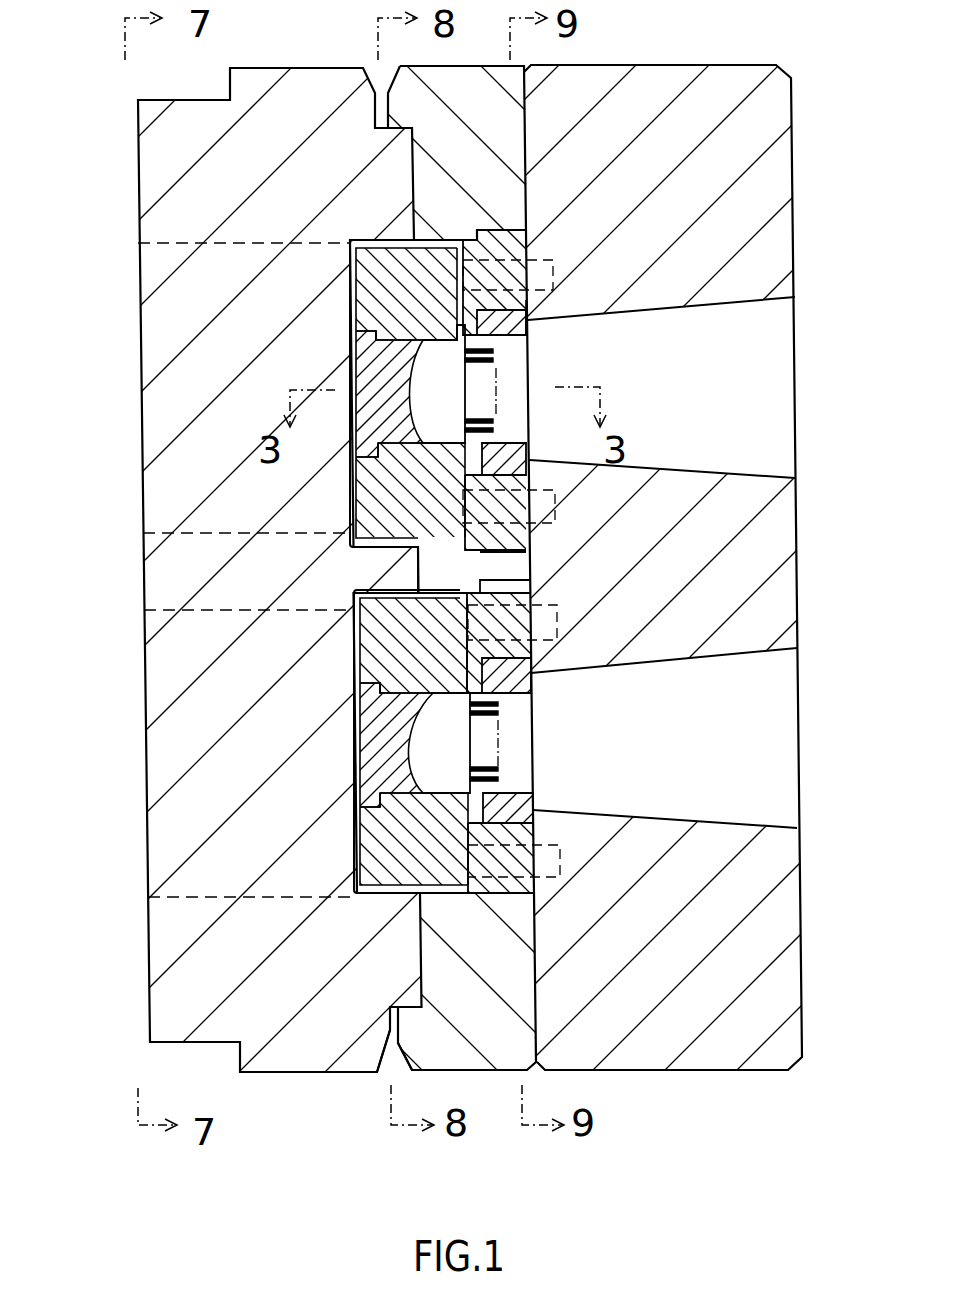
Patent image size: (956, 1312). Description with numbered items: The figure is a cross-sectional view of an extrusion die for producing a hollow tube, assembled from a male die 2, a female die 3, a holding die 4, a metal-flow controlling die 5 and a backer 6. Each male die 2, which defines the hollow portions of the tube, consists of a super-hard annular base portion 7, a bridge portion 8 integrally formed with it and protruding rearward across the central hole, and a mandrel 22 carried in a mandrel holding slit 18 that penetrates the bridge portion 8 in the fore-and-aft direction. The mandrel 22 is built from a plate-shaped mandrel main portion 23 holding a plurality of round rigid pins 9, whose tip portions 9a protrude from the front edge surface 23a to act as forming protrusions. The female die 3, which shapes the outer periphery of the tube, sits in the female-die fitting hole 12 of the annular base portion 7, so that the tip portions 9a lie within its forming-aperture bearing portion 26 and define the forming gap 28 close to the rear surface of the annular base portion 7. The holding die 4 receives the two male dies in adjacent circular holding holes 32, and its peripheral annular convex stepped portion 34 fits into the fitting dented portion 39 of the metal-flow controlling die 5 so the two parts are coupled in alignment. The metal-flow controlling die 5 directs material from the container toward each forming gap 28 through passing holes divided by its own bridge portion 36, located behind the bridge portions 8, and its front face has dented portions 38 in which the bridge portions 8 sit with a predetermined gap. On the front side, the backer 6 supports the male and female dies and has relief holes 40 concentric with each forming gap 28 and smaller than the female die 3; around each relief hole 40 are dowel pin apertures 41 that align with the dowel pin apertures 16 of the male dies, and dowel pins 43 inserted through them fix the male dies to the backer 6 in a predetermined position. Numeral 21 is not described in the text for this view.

The male die 2 is at (390, 262).
The female die 3 is at (532, 313).
The holding die 4 is at (467, 100).
The metal-flow controlling die 5 is at (291, 100).
The backer 6 is at (645, 97).
The annular base portion 7 is at (480, 250).
The bridge portion 8 is at (352, 324).
The rigid pins 9 is at (496, 353).
The tip portion 9a is at (500, 393).
The female-die fitting hole 12 is at (533, 245).
The dowel pin apertures 16 is at (540, 797).
The mandrel holding slit 18 is at (375, 455).
The upper insert block 21 is at (367, 250).
The mandrel 22 is at (400, 335).
The mandrel main portion 23 is at (372, 378).
The front edge surface 23a is at (474, 383).
The forming-aperture bearing portion 26 is at (500, 442).
The forming gap 28 is at (500, 435).
The holding hole 32 is at (438, 238).
The annular convex stepped portion 34 is at (398, 1030).
The bridge portion 36 is at (175, 405).
The dented portions 38 is at (372, 507).
The fitting dented portion 39 is at (372, 1036).
The relief hole 40 is at (685, 470).
The dowel pin apertures 41 is at (545, 845).
The dowel pins 43 is at (526, 212).